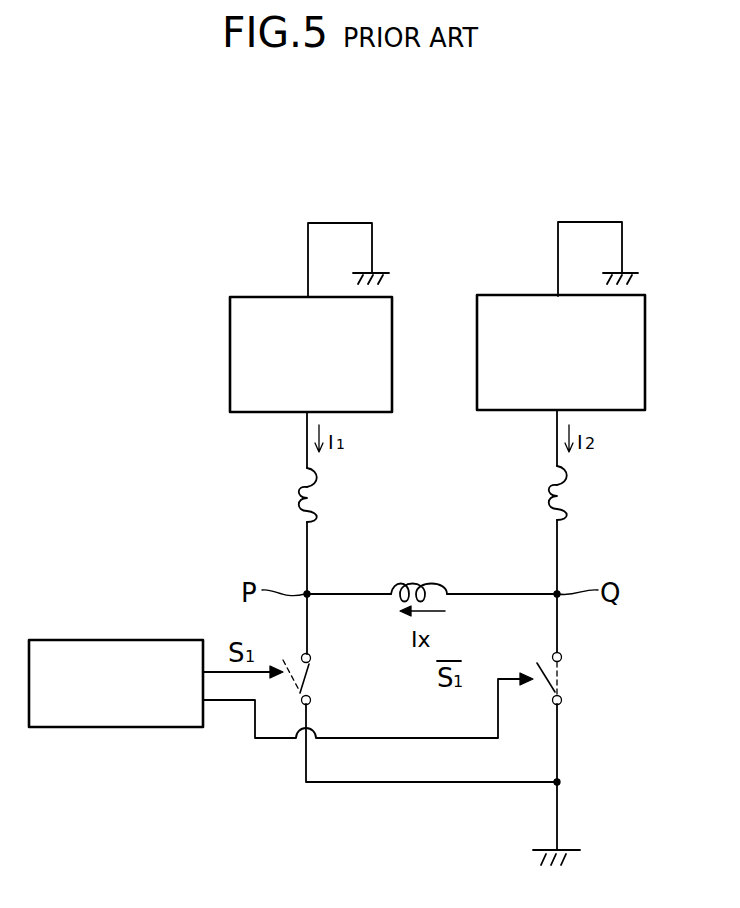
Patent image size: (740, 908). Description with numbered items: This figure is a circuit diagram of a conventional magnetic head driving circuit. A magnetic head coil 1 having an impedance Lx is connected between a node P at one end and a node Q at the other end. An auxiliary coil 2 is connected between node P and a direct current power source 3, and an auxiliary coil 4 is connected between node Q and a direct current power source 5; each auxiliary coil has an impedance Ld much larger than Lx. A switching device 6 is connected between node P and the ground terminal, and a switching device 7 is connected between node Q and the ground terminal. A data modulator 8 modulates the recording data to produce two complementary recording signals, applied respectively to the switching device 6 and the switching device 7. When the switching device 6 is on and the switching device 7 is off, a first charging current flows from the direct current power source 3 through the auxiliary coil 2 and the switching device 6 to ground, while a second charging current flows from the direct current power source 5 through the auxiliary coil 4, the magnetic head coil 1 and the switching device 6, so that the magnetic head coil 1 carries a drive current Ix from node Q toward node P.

The magnetic head coil 1 is at (422, 585).
The auxiliary coil 2 is at (318, 493).
The direct current power source 3 is at (392, 363).
The auxiliary coil 4 is at (568, 490).
The direct current power source 5 is at (645, 362).
The switching device 6 is at (310, 677).
The switching device 7 is at (559, 677).
The data modulator 8 is at (98, 640).